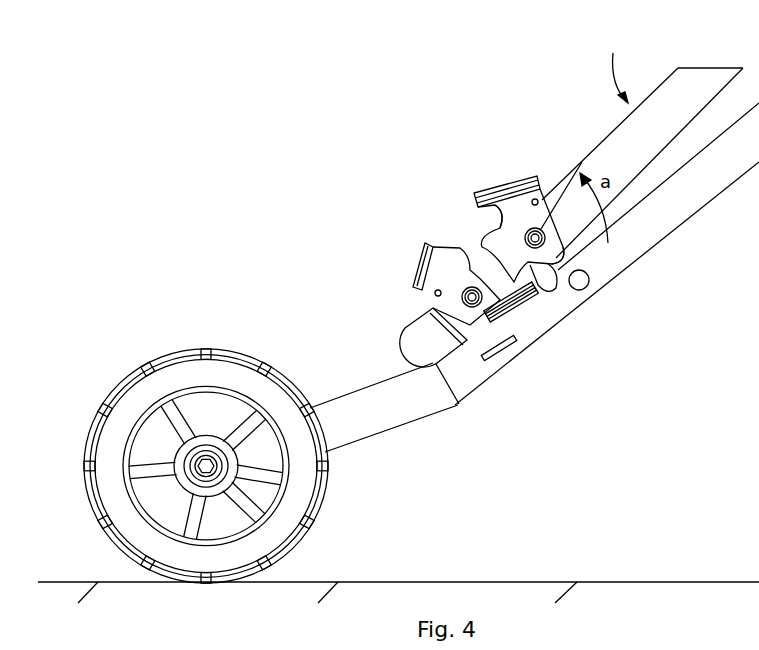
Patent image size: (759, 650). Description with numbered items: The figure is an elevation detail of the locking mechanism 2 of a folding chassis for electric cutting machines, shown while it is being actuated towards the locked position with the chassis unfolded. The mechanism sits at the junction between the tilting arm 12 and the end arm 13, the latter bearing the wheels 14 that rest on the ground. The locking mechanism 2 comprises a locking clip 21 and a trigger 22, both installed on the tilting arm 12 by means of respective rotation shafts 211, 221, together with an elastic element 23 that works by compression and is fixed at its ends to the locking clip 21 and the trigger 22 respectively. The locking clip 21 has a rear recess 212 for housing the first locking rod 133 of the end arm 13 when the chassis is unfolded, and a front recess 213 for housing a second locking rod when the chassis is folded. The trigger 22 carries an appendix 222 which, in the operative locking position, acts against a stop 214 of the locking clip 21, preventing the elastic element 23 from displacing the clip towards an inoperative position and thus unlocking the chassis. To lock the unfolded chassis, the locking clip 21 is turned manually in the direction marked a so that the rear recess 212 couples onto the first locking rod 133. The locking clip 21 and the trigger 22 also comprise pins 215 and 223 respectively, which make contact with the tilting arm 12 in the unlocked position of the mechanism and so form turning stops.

The locking mechanism 2 is at (481, 362).
The tilting arm 12 is at (630, 137).
The end arm 13 is at (683, 197).
The wheels 14 is at (223, 383).
The locking clip 21 is at (515, 187).
The trigger 22 is at (420, 268).
The elastic element 23 is at (520, 308).
The first locking rod 133 is at (589, 287).
The rotation shaft 211 is at (560, 248).
The rear recess 212 is at (553, 278).
The front recess 213 is at (482, 190).
The stop 214 is at (480, 232).
The pin 215 is at (560, 245).
The rotation shaft 221 is at (500, 353).
The appendix 222 is at (465, 265).
The pin 223 is at (435, 294).